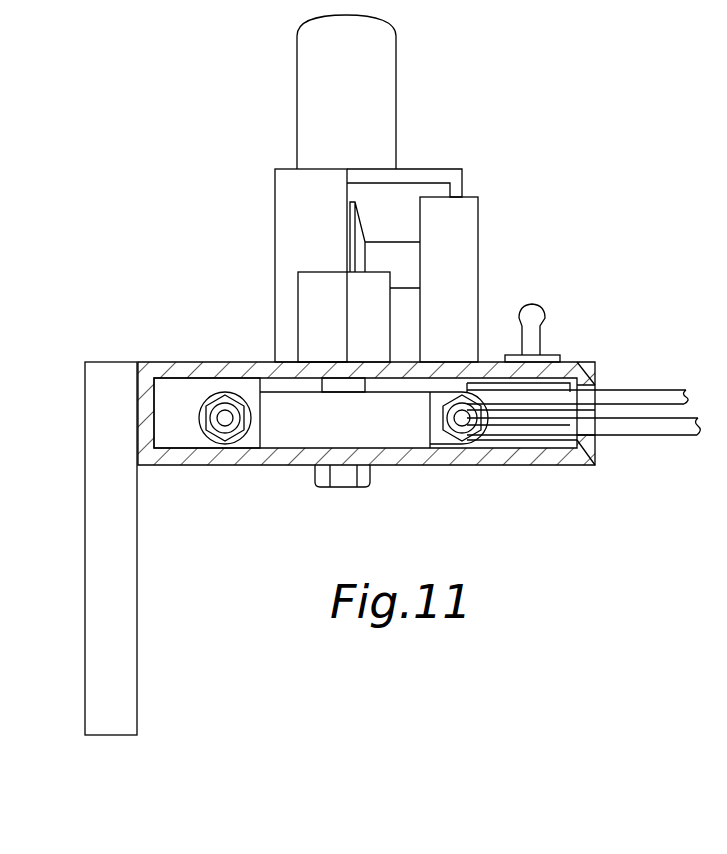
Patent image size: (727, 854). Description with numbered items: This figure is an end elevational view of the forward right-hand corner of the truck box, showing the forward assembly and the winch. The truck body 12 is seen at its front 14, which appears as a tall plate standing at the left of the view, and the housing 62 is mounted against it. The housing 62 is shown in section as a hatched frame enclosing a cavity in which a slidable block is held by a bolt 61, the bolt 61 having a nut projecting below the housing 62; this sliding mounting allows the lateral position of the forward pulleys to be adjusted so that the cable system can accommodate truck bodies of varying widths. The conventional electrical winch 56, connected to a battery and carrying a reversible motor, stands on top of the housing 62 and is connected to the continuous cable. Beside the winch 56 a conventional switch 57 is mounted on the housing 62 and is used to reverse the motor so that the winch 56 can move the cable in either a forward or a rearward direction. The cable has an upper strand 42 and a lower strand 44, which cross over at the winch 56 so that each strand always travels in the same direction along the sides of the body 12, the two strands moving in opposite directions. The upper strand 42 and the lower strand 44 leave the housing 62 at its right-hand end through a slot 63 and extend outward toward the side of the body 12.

The truck body 12 is at (70, 548).
The front 14 is at (85, 545).
The upper strand 42 is at (650, 388).
The lower strand 44 is at (650, 435).
The winch 56 is at (297, 93).
The switch 57 is at (535, 305).
The bolt 61 is at (355, 487).
The housing 62 is at (200, 362).
The slot 63 is at (585, 380).